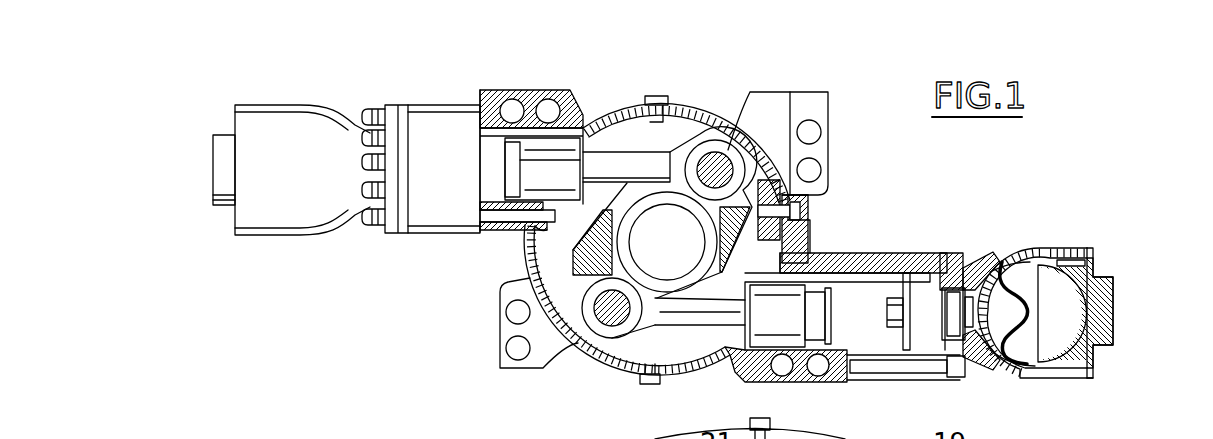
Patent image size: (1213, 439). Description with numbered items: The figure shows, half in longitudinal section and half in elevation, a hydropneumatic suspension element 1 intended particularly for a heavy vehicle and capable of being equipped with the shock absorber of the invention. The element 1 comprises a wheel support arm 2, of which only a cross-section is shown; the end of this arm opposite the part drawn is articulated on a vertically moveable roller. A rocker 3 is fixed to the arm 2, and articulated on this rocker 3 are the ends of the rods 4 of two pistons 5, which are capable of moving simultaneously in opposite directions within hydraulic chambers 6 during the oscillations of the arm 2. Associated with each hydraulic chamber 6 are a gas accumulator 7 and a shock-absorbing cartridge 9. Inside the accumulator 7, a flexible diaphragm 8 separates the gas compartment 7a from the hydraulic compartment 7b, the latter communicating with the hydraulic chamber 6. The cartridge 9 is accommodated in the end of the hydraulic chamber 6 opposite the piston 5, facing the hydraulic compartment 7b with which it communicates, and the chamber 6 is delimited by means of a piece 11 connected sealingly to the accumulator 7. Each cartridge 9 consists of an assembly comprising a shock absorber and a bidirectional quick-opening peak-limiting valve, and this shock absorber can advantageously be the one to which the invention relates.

The hydropneumatic suspension element 1 is at (636, 96).
The wheel support arm 2 is at (667, 242).
The rocker 3 is at (770, 262).
The rod 4 is at (600, 165).
The piston 5 is at (775, 325).
The hydraulic chamber 6 is at (494, 150).
The gas accumulator 7 is at (304, 106).
The gas compartment 7a is at (1057, 300).
The hydraulic compartment 7b is at (993, 328).
The flexible diaphragm 8 is at (1023, 364).
The shock-absorbing cartridge 9 is at (437, 172).
The piece 11 is at (862, 338).